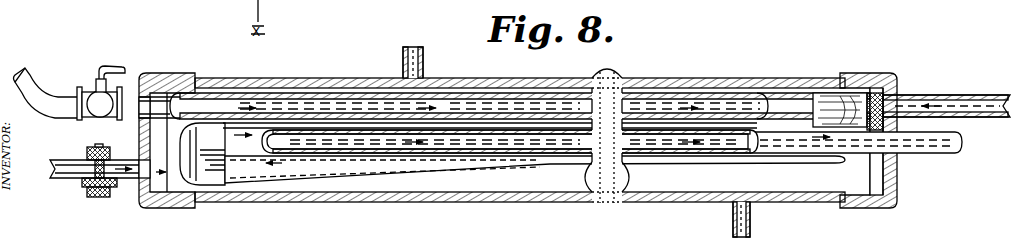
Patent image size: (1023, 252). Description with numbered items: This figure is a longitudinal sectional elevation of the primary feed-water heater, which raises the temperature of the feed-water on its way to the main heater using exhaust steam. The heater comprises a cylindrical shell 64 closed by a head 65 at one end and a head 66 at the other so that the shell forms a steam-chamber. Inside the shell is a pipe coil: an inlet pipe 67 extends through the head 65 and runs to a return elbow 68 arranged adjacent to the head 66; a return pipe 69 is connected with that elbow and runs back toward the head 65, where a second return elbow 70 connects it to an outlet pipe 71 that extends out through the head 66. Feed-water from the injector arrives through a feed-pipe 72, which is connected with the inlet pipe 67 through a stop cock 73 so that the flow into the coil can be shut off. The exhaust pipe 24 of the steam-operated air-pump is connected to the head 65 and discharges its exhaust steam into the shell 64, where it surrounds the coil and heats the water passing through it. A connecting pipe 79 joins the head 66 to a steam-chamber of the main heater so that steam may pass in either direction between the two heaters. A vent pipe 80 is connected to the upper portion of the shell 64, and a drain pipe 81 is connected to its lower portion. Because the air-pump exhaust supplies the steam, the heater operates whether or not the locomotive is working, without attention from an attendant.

The exhaust pipe 24 is at (67, 181).
The cylindrical shell 64 is at (607, 126).
The head 65 is at (139, 138).
The head 66 is at (897, 178).
The inlet pipe 67 is at (493, 107).
The return elbow 68 is at (873, 96).
The return pipe 69 is at (469, 162).
The return elbow 70 is at (200, 182).
The outlet pipe 71 is at (782, 143).
The feed-pipe 72 is at (43, 92).
The stop cock 73 is at (94, 118).
The connecting pipe 79 is at (933, 95).
The vent pipe 80 is at (403, 55).
The drain pipe 81 is at (733, 224).